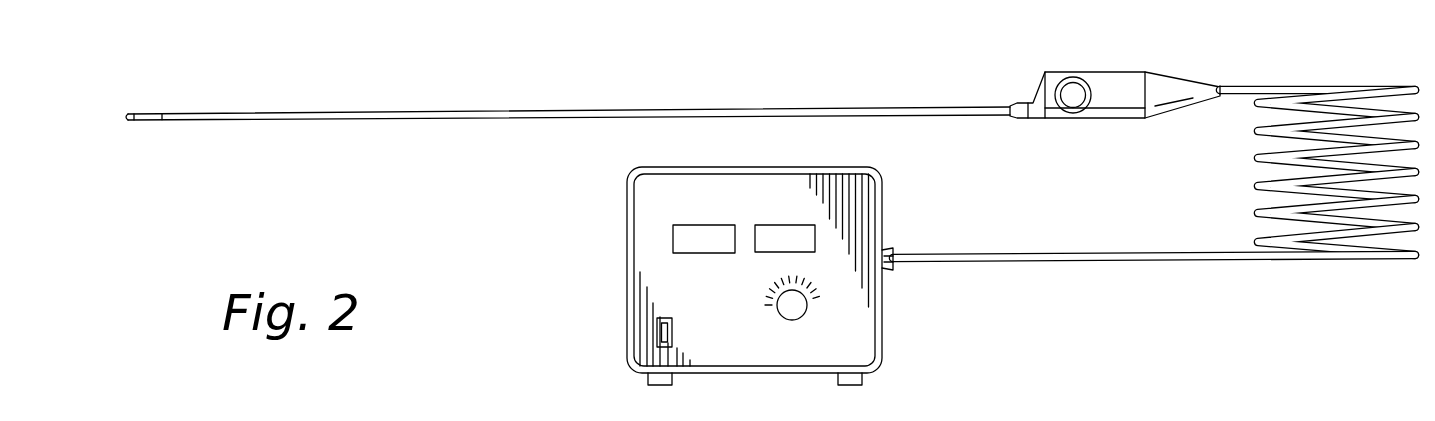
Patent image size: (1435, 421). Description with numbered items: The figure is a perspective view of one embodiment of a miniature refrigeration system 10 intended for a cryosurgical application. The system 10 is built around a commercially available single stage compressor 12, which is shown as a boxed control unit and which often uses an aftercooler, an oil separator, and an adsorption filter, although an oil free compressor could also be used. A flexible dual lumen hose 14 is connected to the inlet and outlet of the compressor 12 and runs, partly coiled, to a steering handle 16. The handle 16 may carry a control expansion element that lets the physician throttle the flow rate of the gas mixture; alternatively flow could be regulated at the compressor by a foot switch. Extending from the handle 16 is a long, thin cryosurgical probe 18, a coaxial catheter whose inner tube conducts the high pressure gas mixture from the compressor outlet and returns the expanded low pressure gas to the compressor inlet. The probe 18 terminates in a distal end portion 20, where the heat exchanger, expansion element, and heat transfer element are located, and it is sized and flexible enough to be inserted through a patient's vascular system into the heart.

The refrigeration system 10 is at (859, 65).
The single stage compressor 12 is at (627, 232).
The flexible dual lumen hose 14 is at (1142, 250).
The steering handle 16 is at (1097, 72).
The cryosurgical probe 18 is at (473, 110).
The distal end portion 20 is at (187, 112).